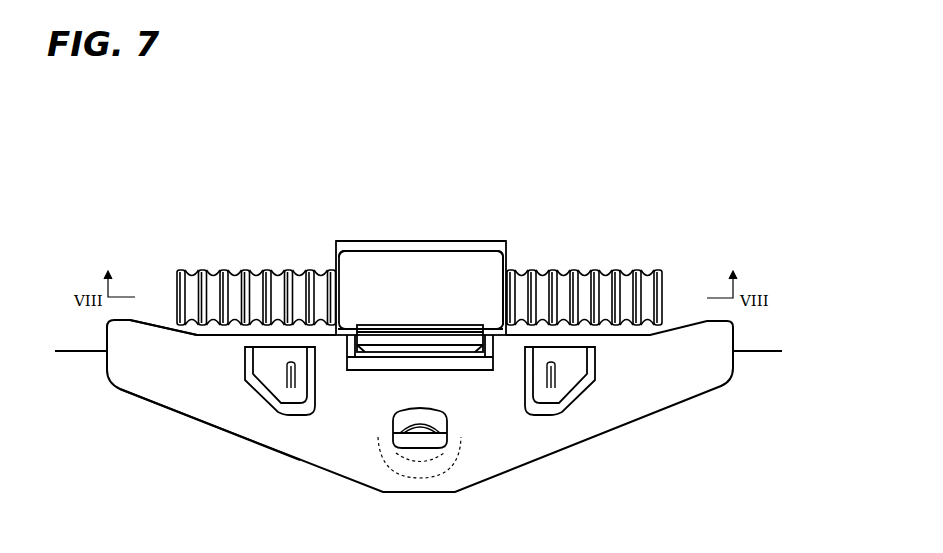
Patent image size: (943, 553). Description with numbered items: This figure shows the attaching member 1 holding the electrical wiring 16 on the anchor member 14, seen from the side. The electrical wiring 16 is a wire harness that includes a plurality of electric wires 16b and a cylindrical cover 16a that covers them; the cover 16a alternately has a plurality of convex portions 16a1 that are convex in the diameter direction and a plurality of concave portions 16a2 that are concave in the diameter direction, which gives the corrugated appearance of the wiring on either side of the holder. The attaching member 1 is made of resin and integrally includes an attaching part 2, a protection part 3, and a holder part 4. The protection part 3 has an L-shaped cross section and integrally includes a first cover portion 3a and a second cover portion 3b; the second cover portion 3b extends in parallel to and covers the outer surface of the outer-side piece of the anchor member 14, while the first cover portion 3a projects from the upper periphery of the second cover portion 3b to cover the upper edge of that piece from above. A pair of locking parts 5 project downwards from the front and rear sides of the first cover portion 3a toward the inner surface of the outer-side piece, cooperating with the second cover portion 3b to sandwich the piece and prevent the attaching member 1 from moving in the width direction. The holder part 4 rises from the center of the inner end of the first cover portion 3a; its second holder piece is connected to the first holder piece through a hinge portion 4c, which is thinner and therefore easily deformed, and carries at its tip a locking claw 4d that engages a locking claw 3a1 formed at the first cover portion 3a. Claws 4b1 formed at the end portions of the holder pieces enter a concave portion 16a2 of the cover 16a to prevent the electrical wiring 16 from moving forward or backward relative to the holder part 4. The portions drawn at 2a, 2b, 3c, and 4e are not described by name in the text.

The attaching member 1 is at (349, 230).
The attaching part 2 is at (439, 473).
The magnet 2a is at (432, 442).
The magnet holder 2b is at (409, 458).
The protection part 3 is at (158, 413).
The first cover portion 3a is at (158, 318).
The locking claw 3a1 is at (447, 358).
The second cover portion 3b is at (223, 410).
The housing frame portion 3c is at (400, 371).
The holder part 4 is at (387, 232).
The claw 4b1 is at (332, 258).
The hinge portion 4c is at (431, 240).
The locking claw 4d is at (451, 325).
The case side wall 4e is at (506, 260).
The locking part 5 is at (292, 388).
The anchor member 14 is at (771, 343).
The electrical wiring 16 is at (239, 255).
The cover 16a is at (594, 270).
The convex portion 16a1 is at (203, 268).
The concave portion 16a2 is at (221, 268).
The electric wire 16b is at (645, 268).